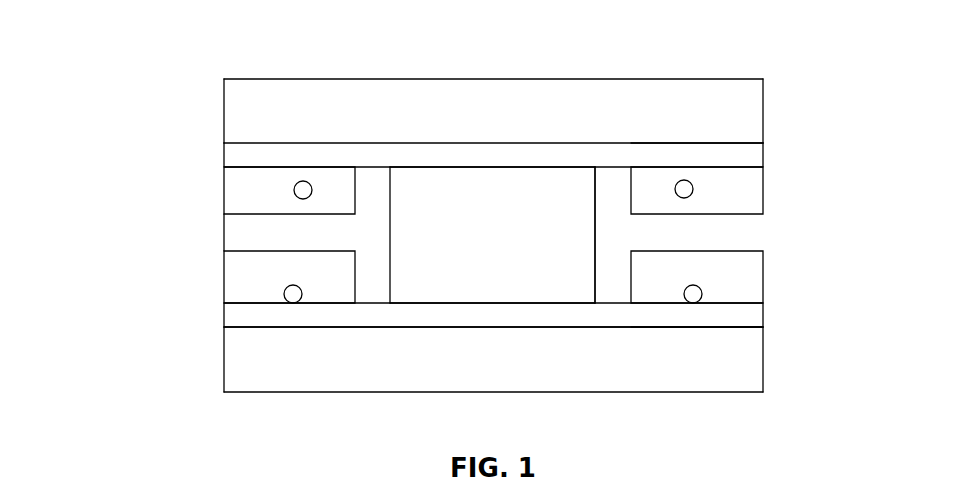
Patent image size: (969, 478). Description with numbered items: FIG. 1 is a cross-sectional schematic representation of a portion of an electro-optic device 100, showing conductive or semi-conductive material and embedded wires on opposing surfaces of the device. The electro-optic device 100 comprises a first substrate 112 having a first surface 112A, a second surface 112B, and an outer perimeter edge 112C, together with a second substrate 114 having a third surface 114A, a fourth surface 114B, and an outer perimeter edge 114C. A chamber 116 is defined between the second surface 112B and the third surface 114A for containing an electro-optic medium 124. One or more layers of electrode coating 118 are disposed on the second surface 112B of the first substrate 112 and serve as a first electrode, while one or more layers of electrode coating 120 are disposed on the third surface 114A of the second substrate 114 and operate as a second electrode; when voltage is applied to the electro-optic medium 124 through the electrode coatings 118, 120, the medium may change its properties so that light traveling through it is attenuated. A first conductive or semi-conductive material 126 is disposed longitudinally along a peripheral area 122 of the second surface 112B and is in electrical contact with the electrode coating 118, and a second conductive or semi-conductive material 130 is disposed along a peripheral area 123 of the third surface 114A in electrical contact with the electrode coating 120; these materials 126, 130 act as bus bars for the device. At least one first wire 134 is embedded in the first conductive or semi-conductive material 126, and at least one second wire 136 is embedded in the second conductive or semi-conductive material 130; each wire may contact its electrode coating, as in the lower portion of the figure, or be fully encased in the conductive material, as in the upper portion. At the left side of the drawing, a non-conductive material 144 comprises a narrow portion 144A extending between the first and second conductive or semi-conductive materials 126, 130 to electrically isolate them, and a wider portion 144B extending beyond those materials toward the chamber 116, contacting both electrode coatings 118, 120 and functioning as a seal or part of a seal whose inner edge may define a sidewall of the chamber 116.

The electro-optic device 100 is at (153, 48).
The first substrate 112 is at (234, 106).
The first surface 112A is at (367, 79).
The second surface 112B is at (425, 143).
The outer perimeter edge 112C is at (764, 93).
The second substrate 114 is at (232, 360).
The third surface 114A is at (597, 328).
The fourth surface 114B is at (622, 393).
The outer perimeter edge 114C is at (766, 342).
The chamber 116 is at (452, 192).
The electrode coating 118 is at (232, 153).
The electrode coating 120 is at (232, 315).
The peripheral area 122 is at (713, 143).
The peripheral area 123 is at (742, 328).
The electro-optic medium 124 is at (550, 195).
The first conductive or semi-conductive material 126 is at (232, 190).
The second conductive or semi-conductive material 130 is at (232, 277).
The first wire 134 is at (303, 181).
The second wire 136 is at (291, 303).
The non-conductive material 144 is at (357, 229).
The narrow portion 144A is at (232, 233).
The wider portion 144B is at (371, 292).